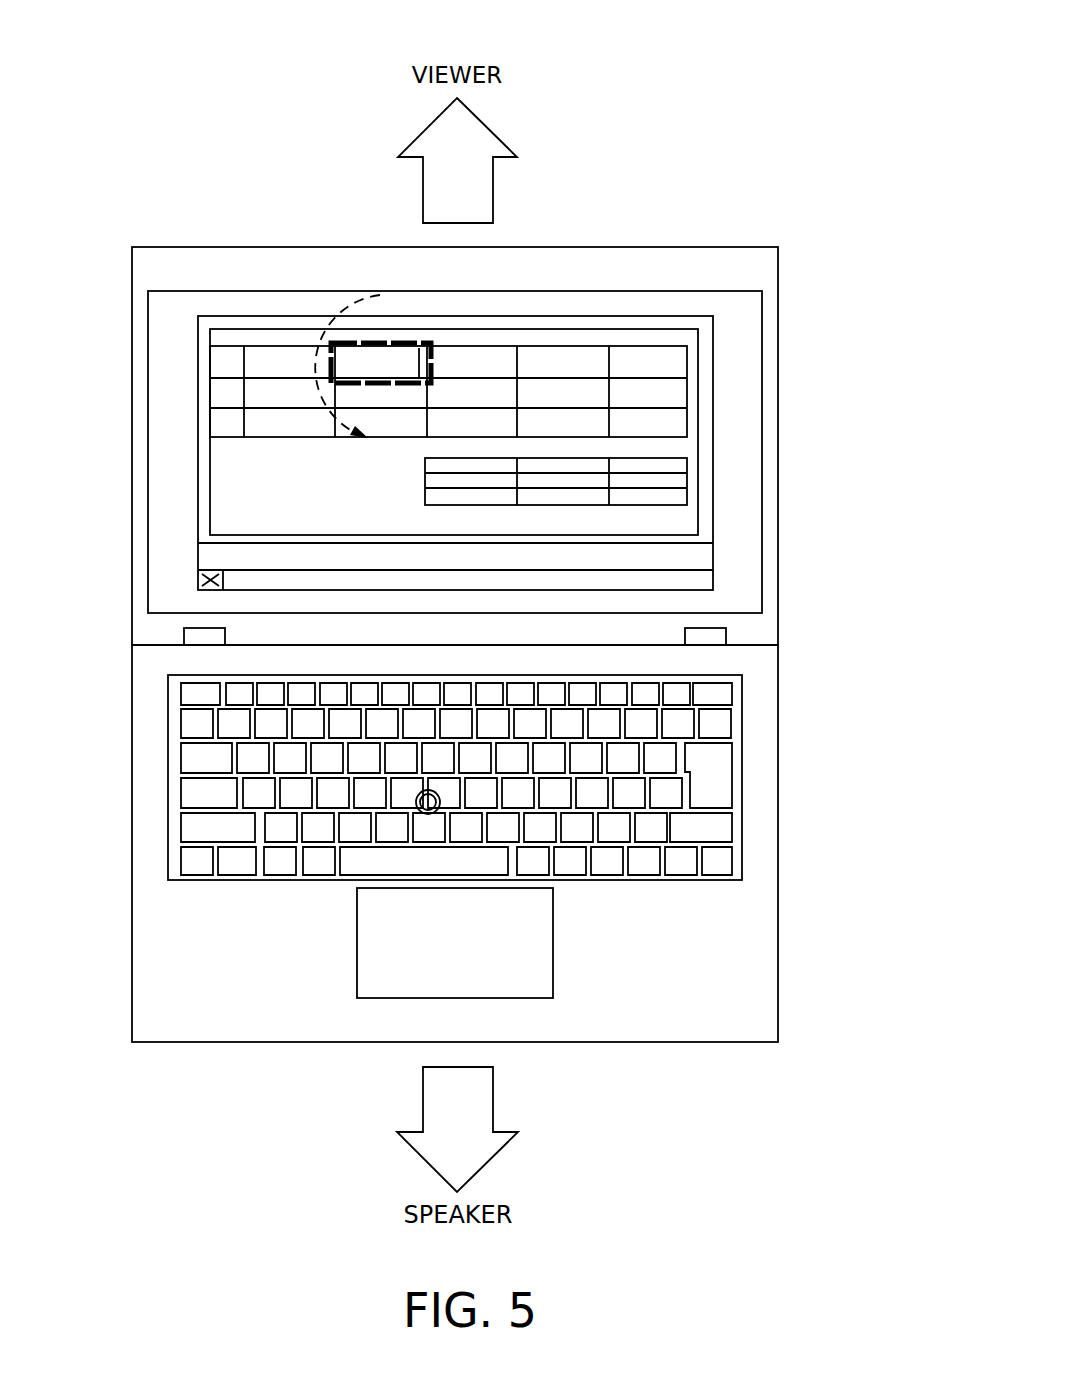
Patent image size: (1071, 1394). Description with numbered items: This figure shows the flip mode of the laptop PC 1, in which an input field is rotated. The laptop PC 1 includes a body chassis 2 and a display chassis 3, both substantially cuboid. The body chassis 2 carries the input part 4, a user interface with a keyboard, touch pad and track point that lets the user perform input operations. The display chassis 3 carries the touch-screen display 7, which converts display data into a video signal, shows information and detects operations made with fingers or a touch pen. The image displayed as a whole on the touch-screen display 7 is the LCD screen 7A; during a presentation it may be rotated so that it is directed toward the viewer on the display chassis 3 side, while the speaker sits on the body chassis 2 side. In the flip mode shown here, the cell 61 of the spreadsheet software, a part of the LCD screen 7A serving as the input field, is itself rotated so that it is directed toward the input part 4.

The laptop PC 1 is at (689, 103).
The body chassis 2 is at (794, 829).
The display chassis 3 is at (794, 486).
The input part 4 is at (152, 767).
The touch-screen display 7 is at (762, 330).
The LCD screen 7A is at (735, 398).
The cell 61 is at (391, 340).